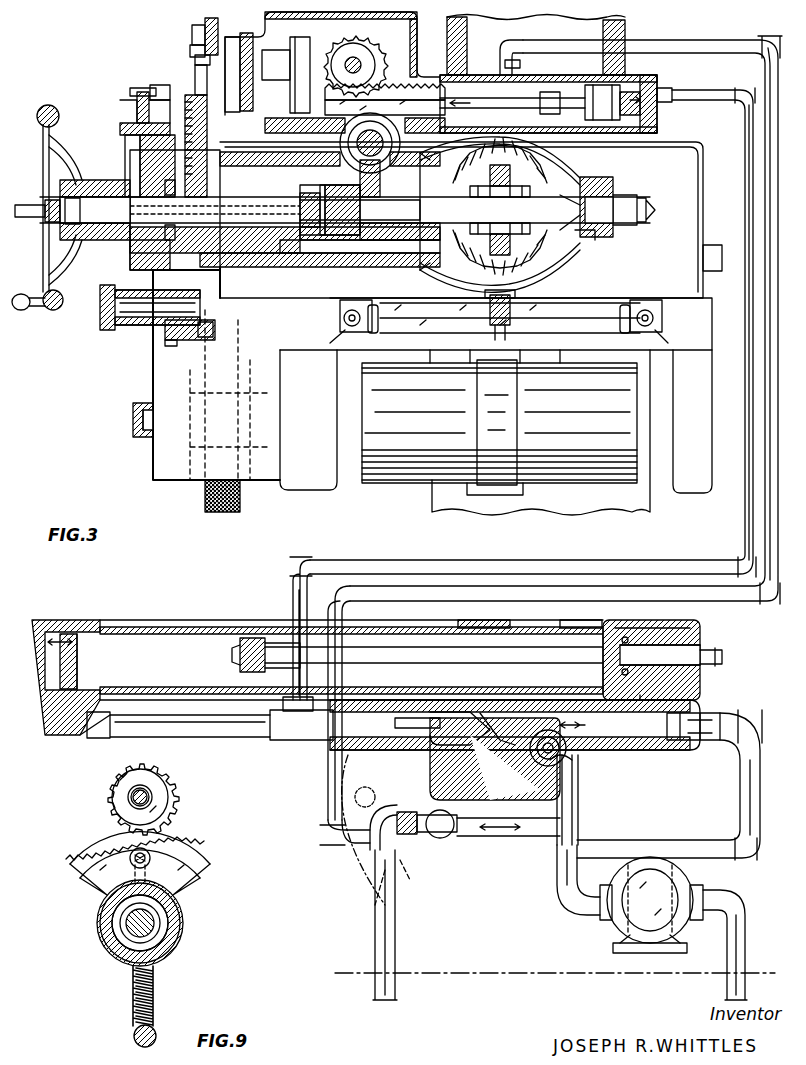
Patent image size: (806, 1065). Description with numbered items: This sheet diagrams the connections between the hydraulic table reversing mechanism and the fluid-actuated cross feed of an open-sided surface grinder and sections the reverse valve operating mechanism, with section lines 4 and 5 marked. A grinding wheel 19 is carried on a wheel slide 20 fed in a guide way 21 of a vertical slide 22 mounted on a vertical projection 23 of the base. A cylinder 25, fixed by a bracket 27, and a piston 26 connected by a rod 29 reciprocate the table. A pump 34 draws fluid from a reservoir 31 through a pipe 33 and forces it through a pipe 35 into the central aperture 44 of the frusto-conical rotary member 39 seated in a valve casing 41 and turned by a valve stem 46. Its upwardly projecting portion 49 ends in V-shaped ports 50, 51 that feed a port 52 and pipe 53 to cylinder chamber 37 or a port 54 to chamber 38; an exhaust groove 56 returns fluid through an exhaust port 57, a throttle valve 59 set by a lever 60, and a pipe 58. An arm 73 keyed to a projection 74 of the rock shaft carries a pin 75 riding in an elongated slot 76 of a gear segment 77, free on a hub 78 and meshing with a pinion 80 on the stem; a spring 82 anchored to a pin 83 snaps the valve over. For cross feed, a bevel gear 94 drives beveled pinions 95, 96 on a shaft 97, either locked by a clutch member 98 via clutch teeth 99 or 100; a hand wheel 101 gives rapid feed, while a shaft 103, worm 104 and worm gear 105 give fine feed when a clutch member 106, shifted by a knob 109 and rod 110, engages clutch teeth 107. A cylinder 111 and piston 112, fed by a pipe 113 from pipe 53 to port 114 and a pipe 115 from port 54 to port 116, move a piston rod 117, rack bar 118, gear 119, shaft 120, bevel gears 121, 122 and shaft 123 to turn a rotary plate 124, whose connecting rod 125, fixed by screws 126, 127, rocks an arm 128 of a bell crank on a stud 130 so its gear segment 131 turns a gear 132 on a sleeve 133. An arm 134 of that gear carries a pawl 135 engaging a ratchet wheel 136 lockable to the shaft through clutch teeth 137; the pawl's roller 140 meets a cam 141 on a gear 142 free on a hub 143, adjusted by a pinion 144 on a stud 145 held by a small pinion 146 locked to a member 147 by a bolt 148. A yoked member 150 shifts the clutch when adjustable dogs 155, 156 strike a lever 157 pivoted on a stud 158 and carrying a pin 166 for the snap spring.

In FIG. 3, the section line 4- 4 is at (107, 449).
In FIG. 3, the section line 5- 5 is at (658, 210).
In FIG. 3, the grinding wheel 19 is at (205, 505).
In FIG. 3, the wheel slide 20 is at (700, 318).
In FIG. 3, the guide way 21 is at (708, 248).
In FIG. 3, the vertical slide 22 is at (690, 155).
In FIG. 3, the vertical projection 23 is at (536, 28).
In FIG. 9, the cylinder 25 is at (155, 628).
In FIG. 9, the piston 26 is at (265, 640).
In FIG. 9, the bracket 27 is at (620, 620).
In FIG. 9, the rod 29 is at (712, 650).
In FIG. 9, the reservoir 31 is at (475, 975).
In FIG. 9, the pipe 33 is at (745, 935).
In FIG. 9, the pump 34 is at (615, 925).
In FIG. 9, the pipe 35 is at (570, 815).
In FIG. 9, the cylinder chamber 37 is at (120, 640).
In FIG. 9, the cylinder chamber 38 is at (540, 635).
In FIG. 9, the rotary member 39 is at (580, 765).
In FIG. 9, the valve casing 41 is at (455, 768).
In FIG. 9, the central aperture 44 is at (575, 772).
In FIG. 9, the valve stem 46 is at (172, 800).
In FIG. 9, the upwardly projecting portion 49 is at (528, 745).
In FIG. 9, the V-shaped port 50 is at (530, 755).
In FIG. 9, the V-shaped port 51 is at (490, 713).
In FIG. 9, the port 52 is at (445, 712).
In FIG. 9, the pipe 53 is at (222, 740).
In FIG. 9, the port 54 is at (630, 742).
In FIG. 9, the exhaust groove 56 is at (568, 790).
In FIG. 9, the exhaust port 57 is at (515, 835).
In FIG. 9, the pipe 58 is at (378, 935).
In FIG. 9, the throttle valve 59 is at (440, 840).
In FIG. 9, the lever 60 is at (410, 880).
In FIG. 9, the arm 73 is at (150, 875).
In FIG. 9, the projection 74 is at (160, 923).
In FIG. 9, the pin 75 is at (150, 858).
In FIG. 9, the elongated slot 76 is at (130, 860).
In FIG. 9, the gear segment 77 is at (80, 860).
In FIG. 9, the hub 78 is at (175, 935).
In FIG. 9, the pinion 80 is at (115, 797).
In FIG. 9, the spring 82 is at (133, 1002).
In FIG. 9, the pin 83 is at (134, 1036).
In FIG. 3, the bevel gear 94 is at (548, 165).
In FIG. 3, the beveled pinion 95 is at (426, 222).
In FIG. 3, the beveled pinion 96 is at (580, 182).
In FIG. 3, the shaft 97 is at (560, 250).
In FIG. 3, the clutch member 98 is at (520, 262).
In FIG. 3, the clutch teeth 99 is at (479, 221).
In FIG. 3, the clutch teeth 100 is at (548, 226).
In FIG. 3, the hand wheel 101 is at (50, 105).
In FIG. 3, the shaft 103 is at (385, 158).
In FIG. 3, the worm 104 is at (341, 201).
In FIG. 3, the worm gear 105 is at (370, 243).
In FIG. 3, the clutch member 106 is at (305, 233).
In FIG. 3, the clutch teeth 107 is at (349, 220).
In FIG. 3, the knob 109 is at (22, 205).
In FIG. 3, the rod 110 is at (95, 170).
In FIG. 3, the fluid pressure cylinder 111 is at (628, 80).
In FIG. 3, the piston 112 is at (590, 85).
In FIG. 3, the pipe 113 is at (395, 562).
In FIG. 3, the port 114 is at (665, 90).
In FIG. 3, the pipe 115 is at (487, 586).
In FIG. 9, the pipe 115 is at (690, 728).
In FIG. 3, the port 116 is at (507, 70).
In FIG. 3, the piston rod 117 is at (452, 65).
In FIG. 3, the rack bar 118 is at (410, 92).
In FIG. 3, the gear 119 is at (378, 60).
In FIG. 3, the shaft 120 is at (330, 151).
In FIG. 3, the bevel gear 121 is at (380, 60).
In FIG. 3, the bevel gear 122 is at (335, 84).
In FIG. 3, the shaft 123 is at (278, 60).
In FIG. 3, the rotary plate 124 is at (205, 25).
In FIG. 3, the connecting rod 125 is at (195, 40).
In FIG. 3, the screw 126 is at (192, 28).
In FIG. 3, the screw 127 is at (190, 52).
In FIG. 3, the arm 128 is at (200, 78).
In FIG. 3, the stud 130 is at (345, 197).
In FIG. 3, the gear segment 131 is at (150, 80).
In FIG. 3, the gear 132 is at (232, 290).
In FIG. 3, the sleeve 133 is at (258, 260).
In FIG. 3, the arm 134 is at (160, 100).
In FIG. 3, the pawl 135 is at (130, 130).
In FIG. 3, the ratchet wheel 136 is at (140, 145).
In FIG. 3, the clutch teeth 137 is at (312, 262).
In FIG. 3, the roller 140 is at (182, 100).
In FIG. 3, the cam 141 is at (150, 261).
In FIG. 3, the gear 142 is at (150, 160).
In FIG. 3, the hub 143 is at (210, 345).
In FIG. 3, the pinion 144 is at (148, 325).
In FIG. 3, the stud 145 is at (132, 325).
In FIG. 3, the small pinion 146 is at (170, 343).
In FIG. 3, the member 147 is at (190, 340).
In FIG. 3, the bolt 148 is at (205, 340).
In FIG. 3, the yoked member 150 is at (555, 270).
In FIG. 3, the adjustable dog 155 is at (372, 275).
In FIG. 3, the adjustable dog 156 is at (645, 300).
In FIG. 3, the lever 157 is at (488, 312).
In FIG. 3, the stud 158 is at (530, 370).
In FIG. 3, the pin 166 is at (495, 335).